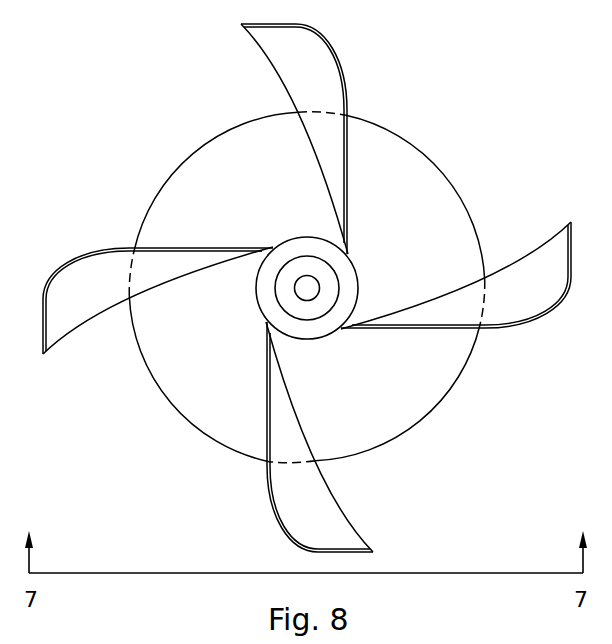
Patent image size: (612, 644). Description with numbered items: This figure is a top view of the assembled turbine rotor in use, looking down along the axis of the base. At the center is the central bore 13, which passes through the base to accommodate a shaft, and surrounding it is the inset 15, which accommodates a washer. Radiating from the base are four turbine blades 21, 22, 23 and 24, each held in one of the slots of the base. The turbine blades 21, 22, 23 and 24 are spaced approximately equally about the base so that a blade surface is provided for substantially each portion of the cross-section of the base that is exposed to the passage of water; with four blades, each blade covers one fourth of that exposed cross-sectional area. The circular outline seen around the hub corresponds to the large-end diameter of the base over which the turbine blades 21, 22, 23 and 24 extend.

The central bore 13 is at (319, 293).
The inset 15 is at (328, 262).
The turbine blade 21 is at (343, 511).
The turbine blade 22 is at (528, 250).
The turbine blade 23 is at (257, 57).
The turbine blade 24 is at (78, 327).